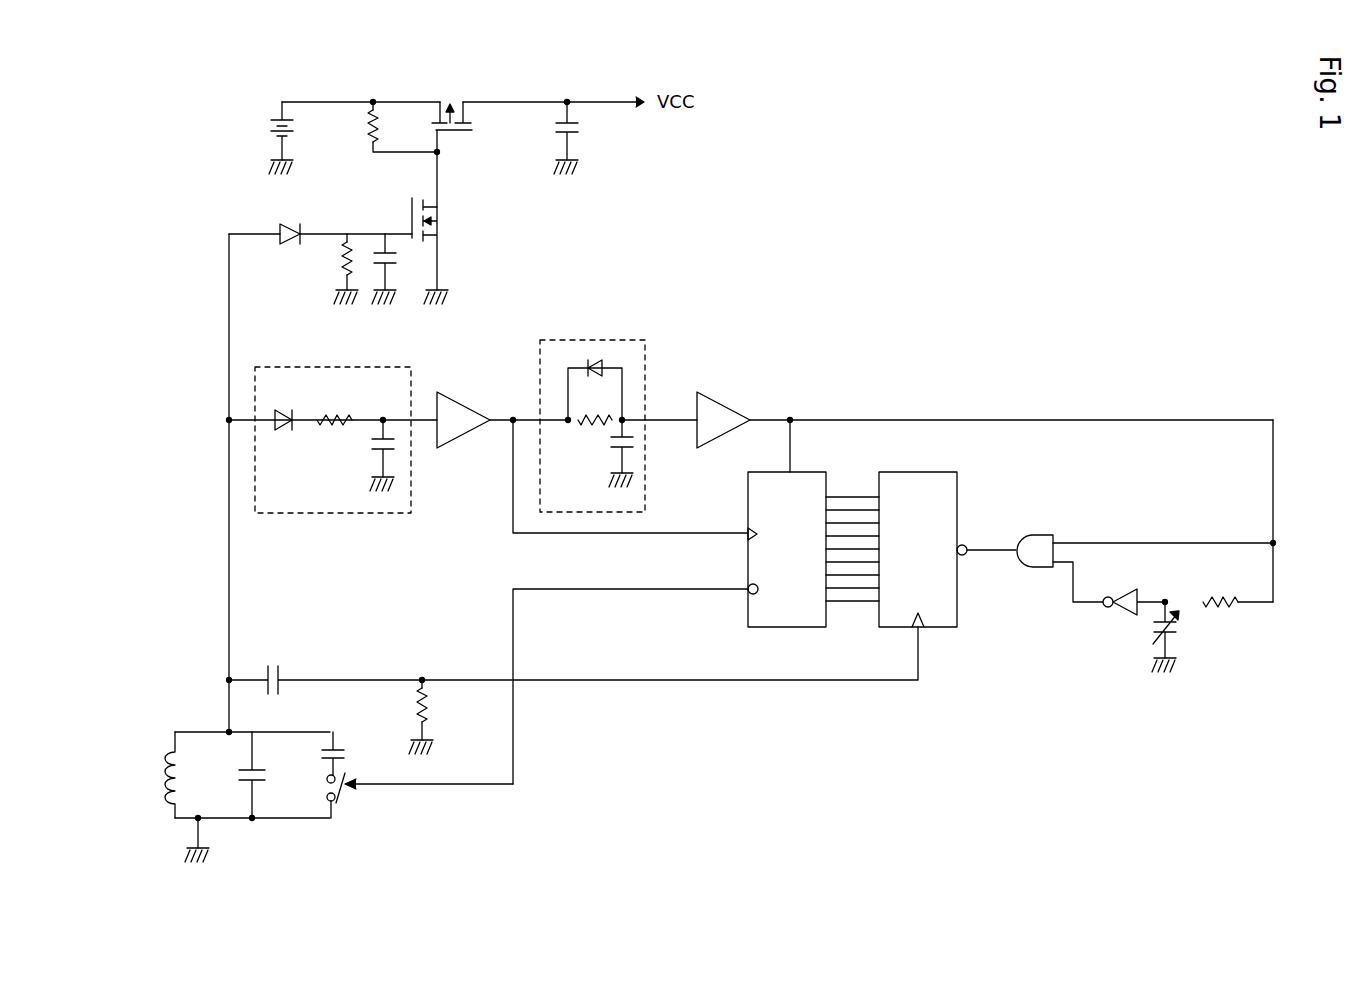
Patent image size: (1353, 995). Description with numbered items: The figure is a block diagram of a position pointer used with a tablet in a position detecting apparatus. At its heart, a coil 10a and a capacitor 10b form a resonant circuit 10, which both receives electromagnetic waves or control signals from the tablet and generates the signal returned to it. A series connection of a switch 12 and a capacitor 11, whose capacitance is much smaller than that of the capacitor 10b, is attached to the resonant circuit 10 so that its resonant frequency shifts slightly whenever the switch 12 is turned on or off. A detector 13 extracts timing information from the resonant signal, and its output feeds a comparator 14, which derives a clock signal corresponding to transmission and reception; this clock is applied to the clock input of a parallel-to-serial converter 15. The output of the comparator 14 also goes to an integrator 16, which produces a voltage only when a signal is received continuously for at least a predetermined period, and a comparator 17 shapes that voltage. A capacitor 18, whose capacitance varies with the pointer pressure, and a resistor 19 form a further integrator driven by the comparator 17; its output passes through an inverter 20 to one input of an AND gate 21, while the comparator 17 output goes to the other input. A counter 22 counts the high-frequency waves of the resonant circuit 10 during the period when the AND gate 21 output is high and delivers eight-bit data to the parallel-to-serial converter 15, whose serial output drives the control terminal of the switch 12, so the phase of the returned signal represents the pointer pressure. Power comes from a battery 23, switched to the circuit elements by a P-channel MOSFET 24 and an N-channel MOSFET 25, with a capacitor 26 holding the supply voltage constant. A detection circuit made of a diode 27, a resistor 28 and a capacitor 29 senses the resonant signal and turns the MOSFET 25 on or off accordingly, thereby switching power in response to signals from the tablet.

The resonant circuit 10 is at (172, 808).
The coil 10a is at (152, 778).
The capacitor 10b is at (258, 794).
The capacitor 11 is at (352, 746).
The switch 12 is at (338, 800).
The detector 13 is at (328, 516).
The comparator 14 is at (458, 438).
The parallel-to-serial converter 15 is at (745, 622).
The integrator 16 is at (609, 336).
The comparator 17 is at (722, 396).
The capacitor 18 is at (1178, 641).
The resistor 19 is at (1240, 612).
The inverter 20 is at (1126, 618).
The AND gate 21 is at (1030, 574).
The counter 22 is at (958, 488).
The battery 23 is at (262, 123).
The P-channel MOSFET 24 is at (478, 124).
The N-channel MOSFET 25 is at (445, 213).
The capacitor 26 is at (586, 129).
The diode 27 is at (286, 247).
The resistor 28 is at (338, 268).
The capacitor 29 is at (398, 262).